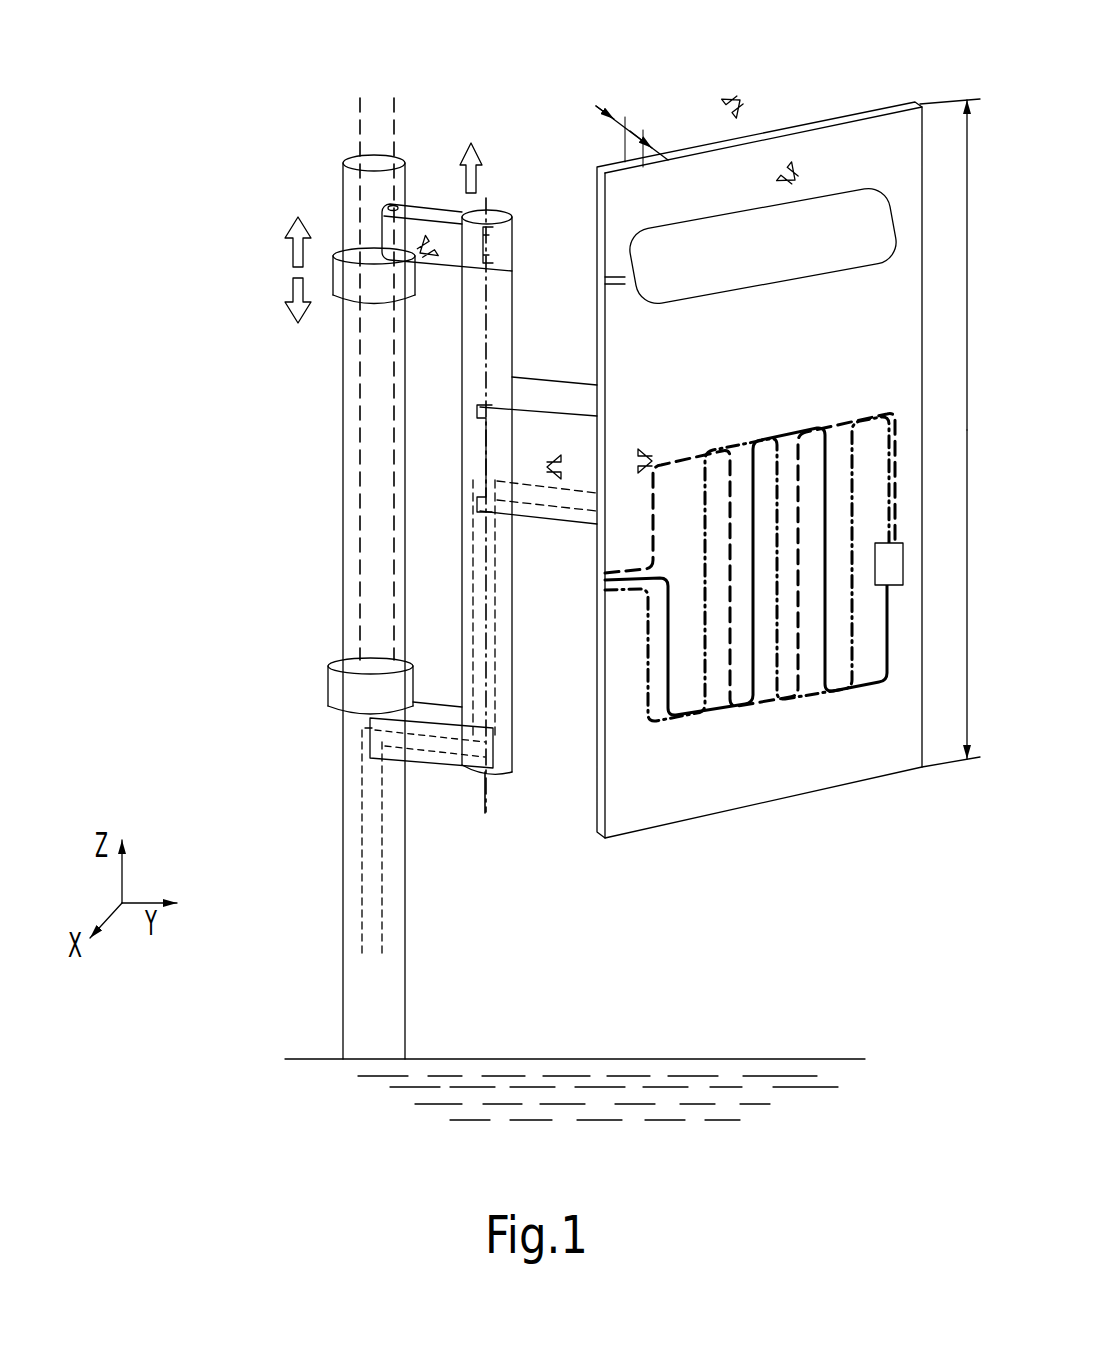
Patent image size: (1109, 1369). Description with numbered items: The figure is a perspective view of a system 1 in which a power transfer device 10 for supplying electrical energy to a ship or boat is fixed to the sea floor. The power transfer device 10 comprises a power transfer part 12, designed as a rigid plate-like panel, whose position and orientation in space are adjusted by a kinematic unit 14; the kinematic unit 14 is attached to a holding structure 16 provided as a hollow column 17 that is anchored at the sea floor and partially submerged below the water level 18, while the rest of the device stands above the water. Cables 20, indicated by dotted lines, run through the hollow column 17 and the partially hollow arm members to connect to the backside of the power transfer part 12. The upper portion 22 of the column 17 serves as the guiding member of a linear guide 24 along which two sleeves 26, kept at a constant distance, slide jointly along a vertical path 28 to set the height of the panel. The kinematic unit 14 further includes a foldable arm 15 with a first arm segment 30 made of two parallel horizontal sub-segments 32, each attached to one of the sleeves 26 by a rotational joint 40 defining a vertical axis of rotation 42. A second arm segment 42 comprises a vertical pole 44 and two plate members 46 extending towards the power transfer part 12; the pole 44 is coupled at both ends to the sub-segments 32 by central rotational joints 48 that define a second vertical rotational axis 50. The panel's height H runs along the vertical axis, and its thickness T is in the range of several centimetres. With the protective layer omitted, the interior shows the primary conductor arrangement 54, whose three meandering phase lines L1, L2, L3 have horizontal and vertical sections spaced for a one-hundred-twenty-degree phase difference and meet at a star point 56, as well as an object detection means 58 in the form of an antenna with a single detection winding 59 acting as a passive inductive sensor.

The system 1 is at (220, 197).
The power transfer device 10 is at (568, 110).
The power transfer part 12 is at (892, 142).
The kinematic unit 14 is at (440, 157).
The foldable arm 15 is at (525, 97).
The holding structure 16 is at (302, 600).
The column 17 is at (355, 773).
The water level 18 is at (838, 1015).
The cables 20 is at (383, 867).
The upper portion 22 is at (308, 420).
The linear guide 24 is at (298, 365).
The sleeves 26 is at (333, 250).
The path 28 is at (360, 117).
The first arm segment 30 is at (483, 192).
The sub-segments 32 is at (462, 252).
The rotational joints 40 is at (415, 308).
The second arm segment 42 is at (395, 105).
The vertical pole 44 is at (498, 360).
The plate members 46 is at (563, 392).
The rotational joints 48 is at (502, 210).
The second rotational axis 50 is at (485, 802).
The primary conductor arrangement 54 is at (751, 577).
The star point 56 is at (892, 585).
The object detection means 58 is at (843, 165).
The detection winding 59 is at (870, 187).
The first phase line L1 is at (648, 640).
The second phase line L2 is at (665, 575).
The third phase line L3 is at (688, 448).
The thickness T is at (632, 126).
The height H is at (955, 433).